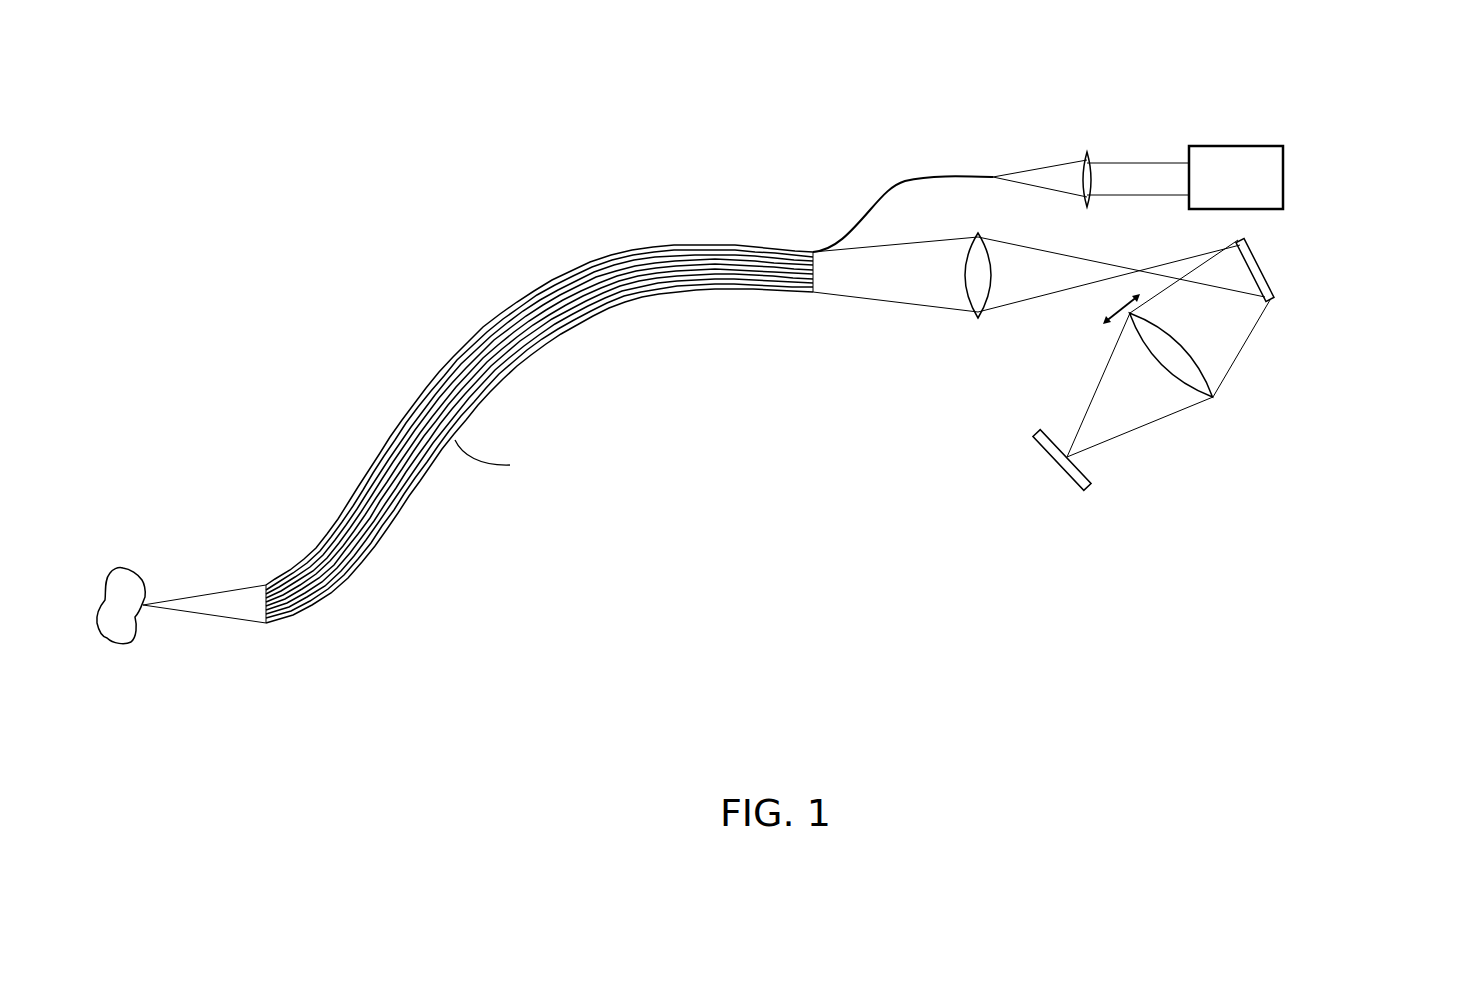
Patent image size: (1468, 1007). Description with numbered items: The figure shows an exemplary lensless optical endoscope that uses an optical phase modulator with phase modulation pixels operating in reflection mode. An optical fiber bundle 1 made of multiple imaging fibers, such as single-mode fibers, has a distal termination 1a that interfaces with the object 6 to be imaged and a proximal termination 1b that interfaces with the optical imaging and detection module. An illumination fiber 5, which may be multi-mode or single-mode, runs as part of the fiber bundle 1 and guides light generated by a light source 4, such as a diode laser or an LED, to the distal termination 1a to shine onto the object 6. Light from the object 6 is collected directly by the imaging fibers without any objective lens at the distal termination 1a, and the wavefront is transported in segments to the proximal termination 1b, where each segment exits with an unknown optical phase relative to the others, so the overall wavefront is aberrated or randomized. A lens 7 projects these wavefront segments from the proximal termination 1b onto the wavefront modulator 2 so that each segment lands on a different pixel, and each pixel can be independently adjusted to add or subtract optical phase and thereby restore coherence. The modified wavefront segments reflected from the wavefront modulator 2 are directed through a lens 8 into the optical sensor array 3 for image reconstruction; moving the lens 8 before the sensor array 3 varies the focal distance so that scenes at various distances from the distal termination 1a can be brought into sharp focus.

The optical fiber bundle 1 is at (674, 303).
The distal termination 1a is at (265, 627).
The proximal termination 1b is at (812, 296).
The wavefront modulator 2 is at (1268, 272).
The optical sensor array 3 is at (1043, 467).
The light source 4 is at (1208, 145).
The illumination fiber 5 is at (902, 185).
The object 6 is at (120, 567).
The lens 7 is at (977, 320).
The lens 8 is at (1213, 397).